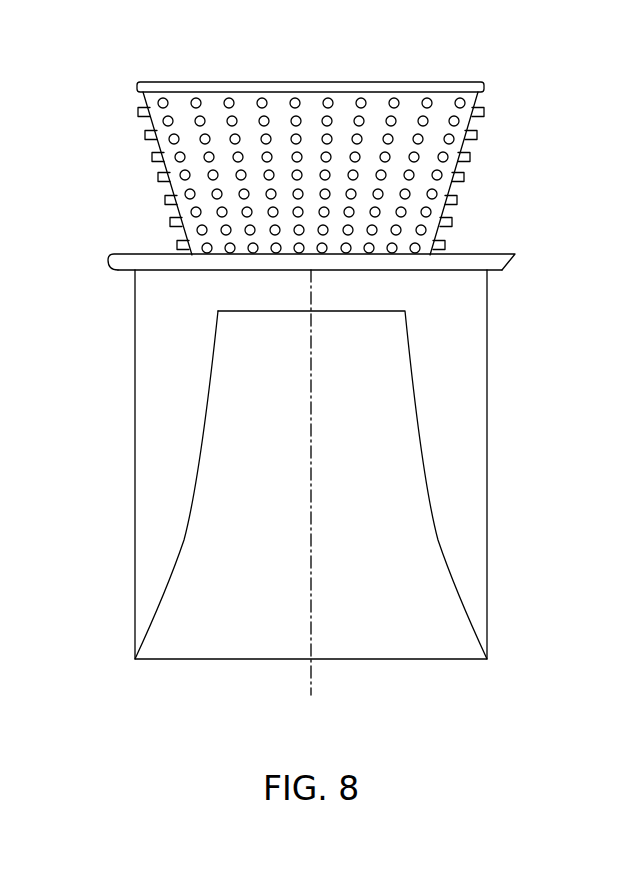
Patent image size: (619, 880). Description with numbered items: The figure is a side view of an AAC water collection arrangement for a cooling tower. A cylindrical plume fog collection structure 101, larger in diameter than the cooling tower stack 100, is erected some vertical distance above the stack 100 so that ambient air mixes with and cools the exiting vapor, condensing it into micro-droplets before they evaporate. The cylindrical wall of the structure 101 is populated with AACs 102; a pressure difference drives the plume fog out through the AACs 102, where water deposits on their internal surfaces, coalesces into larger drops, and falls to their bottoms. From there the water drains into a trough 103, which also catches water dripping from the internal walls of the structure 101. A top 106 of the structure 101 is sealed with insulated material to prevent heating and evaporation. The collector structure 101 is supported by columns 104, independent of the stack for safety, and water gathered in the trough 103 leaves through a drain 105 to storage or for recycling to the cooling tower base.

The cooling tower stack 100 is at (429, 500).
The plume fog collection structure 101 is at (510, 89).
The AACs 102 is at (386, 177).
The trough 103 is at (512, 262).
The columns 104 is at (135, 463).
The drain 105 is at (503, 269).
The top 106 is at (312, 82).